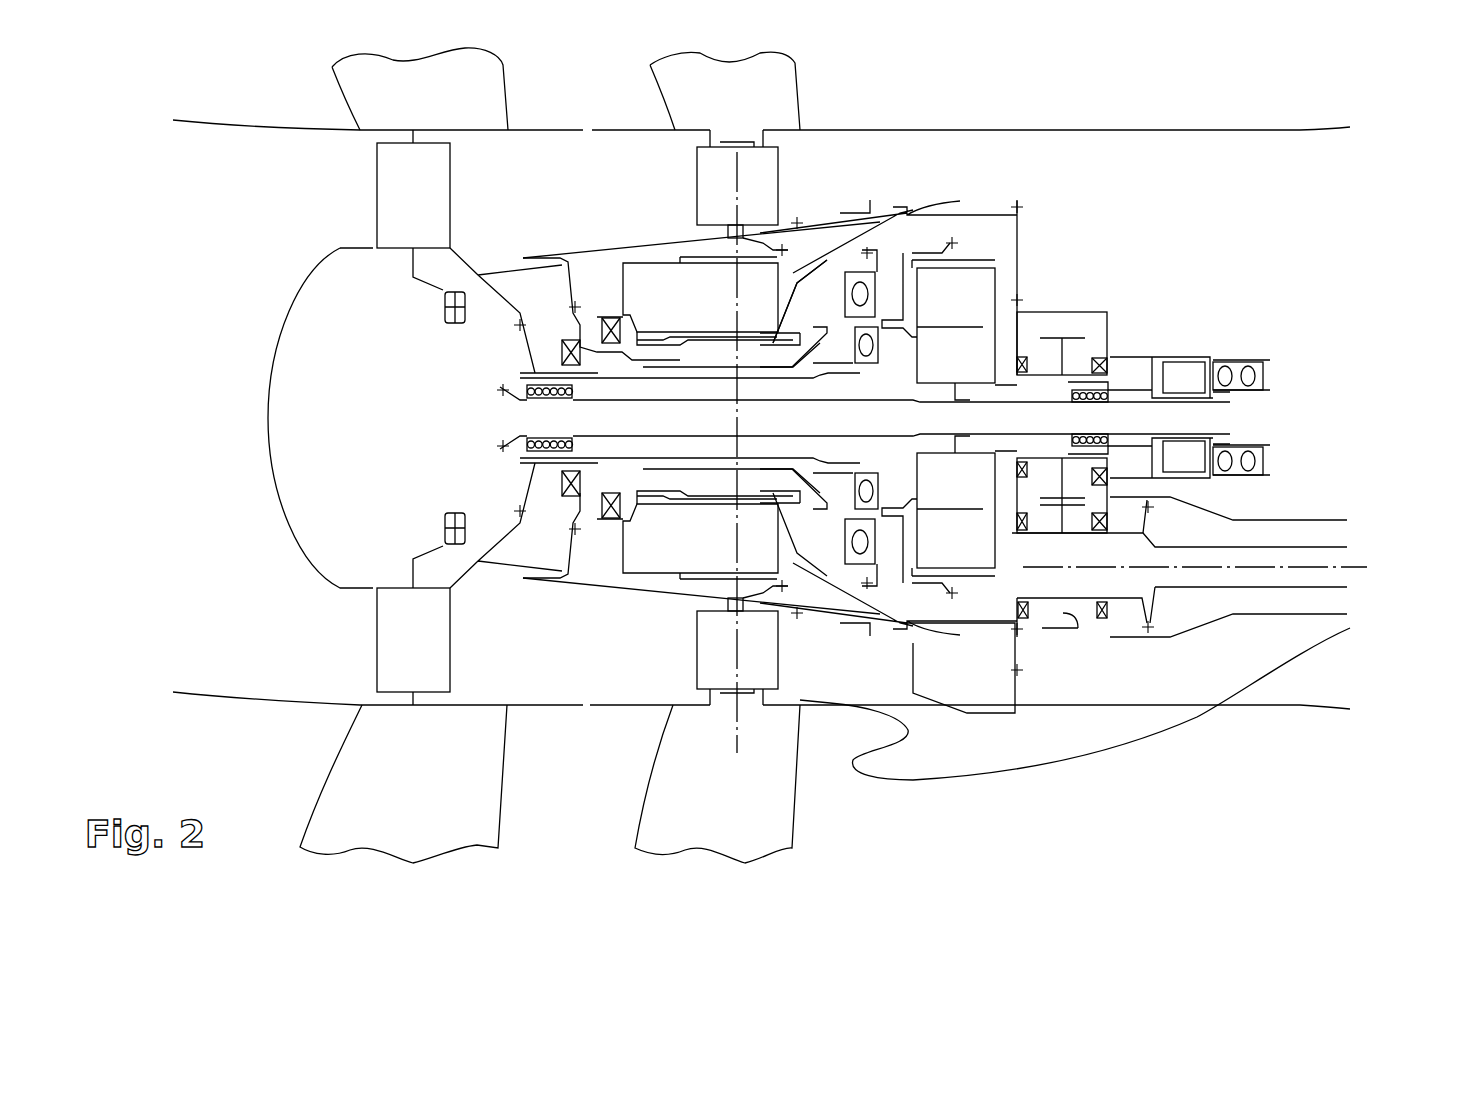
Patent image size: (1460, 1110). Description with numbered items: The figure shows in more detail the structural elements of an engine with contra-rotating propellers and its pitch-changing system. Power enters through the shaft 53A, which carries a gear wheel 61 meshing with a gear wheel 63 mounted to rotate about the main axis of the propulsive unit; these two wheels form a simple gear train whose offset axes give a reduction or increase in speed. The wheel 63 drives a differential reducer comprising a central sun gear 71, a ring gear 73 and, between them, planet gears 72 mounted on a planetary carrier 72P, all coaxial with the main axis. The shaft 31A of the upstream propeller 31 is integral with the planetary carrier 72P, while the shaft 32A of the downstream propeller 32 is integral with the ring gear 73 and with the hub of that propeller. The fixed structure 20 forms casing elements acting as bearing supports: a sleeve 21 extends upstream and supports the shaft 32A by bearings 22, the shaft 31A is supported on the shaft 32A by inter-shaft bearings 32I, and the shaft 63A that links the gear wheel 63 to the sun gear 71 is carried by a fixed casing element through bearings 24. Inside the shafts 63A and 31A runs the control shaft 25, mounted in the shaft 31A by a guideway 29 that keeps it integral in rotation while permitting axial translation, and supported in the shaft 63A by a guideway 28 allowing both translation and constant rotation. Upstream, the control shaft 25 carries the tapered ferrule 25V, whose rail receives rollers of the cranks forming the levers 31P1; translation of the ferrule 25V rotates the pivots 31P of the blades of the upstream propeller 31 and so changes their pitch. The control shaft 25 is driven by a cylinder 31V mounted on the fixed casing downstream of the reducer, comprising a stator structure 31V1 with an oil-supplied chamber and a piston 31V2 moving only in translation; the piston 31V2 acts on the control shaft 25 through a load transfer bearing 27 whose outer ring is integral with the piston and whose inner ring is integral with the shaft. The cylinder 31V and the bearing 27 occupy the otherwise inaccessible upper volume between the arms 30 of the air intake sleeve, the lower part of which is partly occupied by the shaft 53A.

The fixed structure 20 is at (980, 214).
The sleeve 21 is at (775, 340).
The bearings 22 is at (862, 293).
The bearings 24 is at (1107, 367).
The control shaft 25 is at (620, 420).
The ferrule 25V is at (482, 485).
The load transfer bearing 27 is at (1263, 460).
The guideway 28 is at (1110, 440).
The guideway 29 is at (585, 438).
The arms 30 is at (1263, 445).
The upstream propeller 31 is at (404, 455).
The shaft of the upstream propeller 31A is at (617, 460).
The pivots 31P is at (410, 188).
The levers 31P1 is at (428, 283).
The cylinder 31V is at (1260, 406).
The stator structure 31V1 is at (1253, 473).
The piston 31V2 is at (1267, 448).
The downstream propeller 32 is at (717, 457).
The shaft of the downstream propeller 32A is at (690, 350).
The inter-shaft bearings 32I is at (866, 345).
The shaft 53A is at (1253, 443).
The gear wheel 61 is at (1097, 618).
The gear wheel 63 is at (1090, 350).
The shaft 63A is at (1045, 397).
The sun gear 71 is at (977, 398).
The planet gears 72 is at (995, 570).
The ring gear 73 is at (967, 540).
The planetary carrier 72P is at (917, 475).